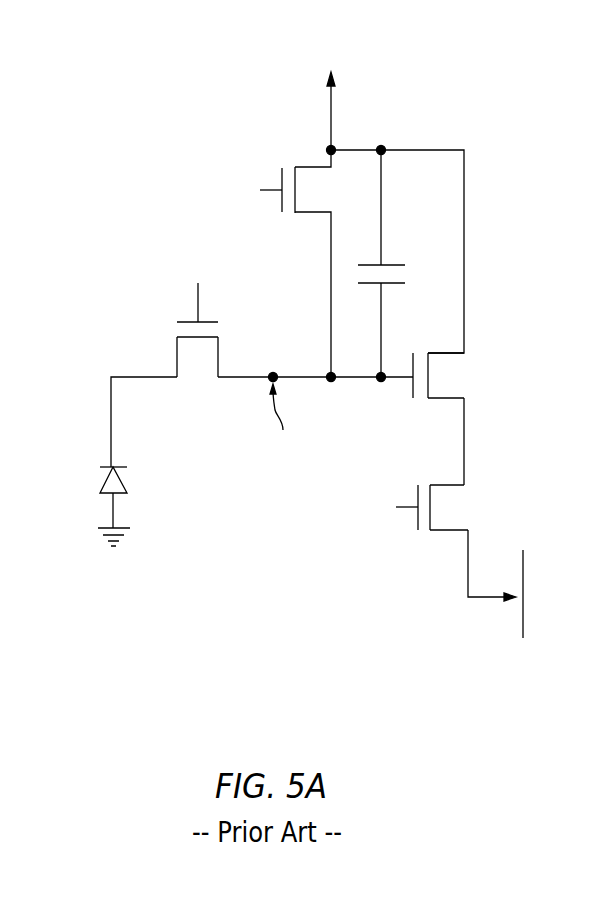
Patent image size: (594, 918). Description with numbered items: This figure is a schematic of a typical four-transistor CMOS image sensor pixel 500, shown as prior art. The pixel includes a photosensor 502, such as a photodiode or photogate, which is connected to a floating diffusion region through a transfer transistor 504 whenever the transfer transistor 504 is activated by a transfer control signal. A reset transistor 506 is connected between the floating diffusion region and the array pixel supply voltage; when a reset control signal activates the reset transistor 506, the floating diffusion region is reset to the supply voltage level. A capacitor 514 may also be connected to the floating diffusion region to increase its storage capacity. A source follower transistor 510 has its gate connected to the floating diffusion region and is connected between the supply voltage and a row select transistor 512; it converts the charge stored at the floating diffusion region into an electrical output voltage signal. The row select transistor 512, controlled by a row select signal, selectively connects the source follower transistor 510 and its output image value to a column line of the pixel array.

The four transistor CMOS image sensor pixel 500 is at (492, 122).
The photosensor 502 is at (99, 494).
The transfer transistor 504 is at (168, 348).
The reset transistor 506 is at (294, 216).
The source follower transistor 510 is at (427, 403).
The row select transistor 512 is at (430, 537).
The capacitor 514 is at (396, 264).